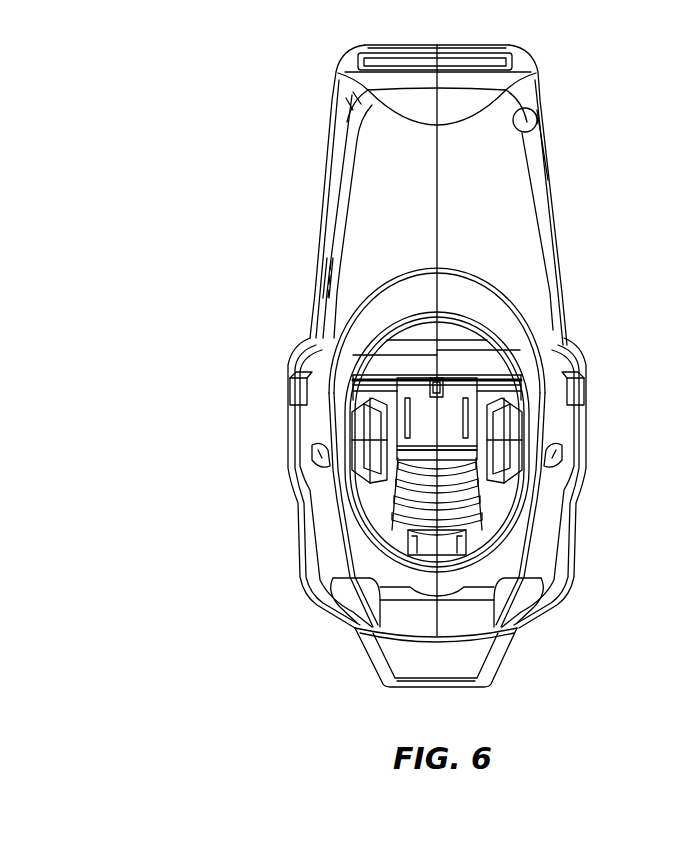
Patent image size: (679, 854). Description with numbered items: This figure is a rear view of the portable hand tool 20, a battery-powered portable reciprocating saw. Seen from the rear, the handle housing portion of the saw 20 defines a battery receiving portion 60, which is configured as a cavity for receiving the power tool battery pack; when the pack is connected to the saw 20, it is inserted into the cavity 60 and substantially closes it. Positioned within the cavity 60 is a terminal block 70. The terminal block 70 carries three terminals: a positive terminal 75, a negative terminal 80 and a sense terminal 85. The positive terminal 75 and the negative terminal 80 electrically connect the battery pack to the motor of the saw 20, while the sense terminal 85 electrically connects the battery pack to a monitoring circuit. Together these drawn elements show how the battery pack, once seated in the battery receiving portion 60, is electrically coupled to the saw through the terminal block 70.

The portable hand tool 20 is at (270, 124).
The battery receiving portion 60 is at (443, 435).
The terminal block 70 is at (456, 388).
The positive terminal 75 is at (470, 417).
The negative terminal 80 is at (408, 406).
The sense terminal 85 is at (400, 477).